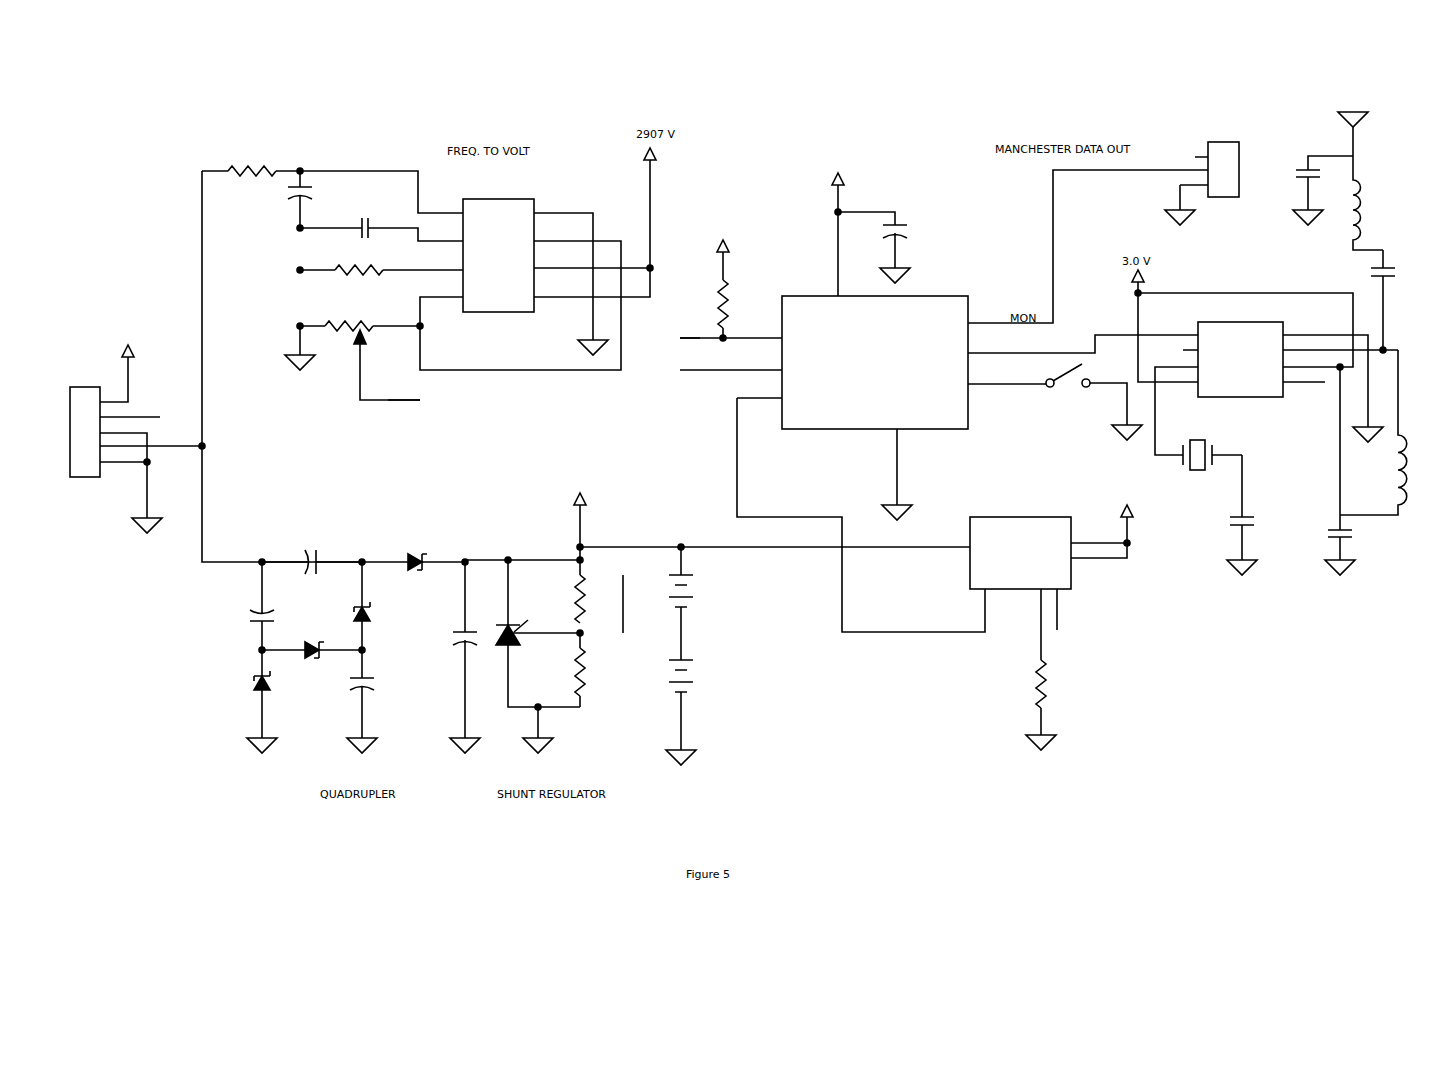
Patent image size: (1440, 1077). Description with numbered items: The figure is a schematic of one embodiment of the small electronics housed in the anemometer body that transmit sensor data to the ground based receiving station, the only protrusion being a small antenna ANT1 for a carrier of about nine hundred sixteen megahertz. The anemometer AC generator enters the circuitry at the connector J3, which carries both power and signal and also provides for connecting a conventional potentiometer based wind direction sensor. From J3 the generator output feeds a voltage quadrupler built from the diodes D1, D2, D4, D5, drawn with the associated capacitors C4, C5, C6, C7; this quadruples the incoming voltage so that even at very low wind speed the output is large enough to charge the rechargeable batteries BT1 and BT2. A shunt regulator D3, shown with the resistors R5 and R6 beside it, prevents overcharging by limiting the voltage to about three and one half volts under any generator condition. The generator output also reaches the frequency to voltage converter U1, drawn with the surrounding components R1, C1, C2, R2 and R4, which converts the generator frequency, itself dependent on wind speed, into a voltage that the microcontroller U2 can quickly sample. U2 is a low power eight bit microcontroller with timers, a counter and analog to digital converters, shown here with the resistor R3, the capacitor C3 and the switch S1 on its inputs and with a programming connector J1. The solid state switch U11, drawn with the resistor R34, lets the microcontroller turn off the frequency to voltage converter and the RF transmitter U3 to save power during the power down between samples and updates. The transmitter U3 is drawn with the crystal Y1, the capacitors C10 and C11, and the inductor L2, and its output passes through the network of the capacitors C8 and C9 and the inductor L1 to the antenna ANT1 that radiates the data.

The resistor 100K R1 is at (251, 149).
The tantalum capacitor 1.0 C1 is at (284, 199).
The capacitor 0.01 C2 is at (339, 228).
The potentiometer 50K R2 is at (352, 354).
The resistor 100K R4 is at (353, 270).
The frequency to voltage converter U1 is at (496, 263).
The connector J3 is at (136, 433).
The capacitor 10 MF C4 is at (312, 541).
The capacitor 10 MF C5 is at (231, 607).
The capacitor 10 MF C6 is at (473, 657).
The capacitor 10 MF C7 is at (386, 701).
The diode D1 is at (415, 545).
The diode D2 is at (370, 606).
The diode D4 is at (313, 641).
The diode D5 is at (283, 700).
The shunt regulator D3 is at (524, 643).
The resistor 32K R5 is at (595, 556).
The resistor 100K R6 is at (599, 670).
The rechargeable battery BT1 is at (704, 602).
The rechargeable battery BT2 is at (702, 704).
The microcontroller U2 is at (832, 381).
The resistor 1 M R3 is at (731, 282).
The capacitor 3.3 C3 is at (887, 246).
The switch MC S1 is at (1055, 396).
The solid state switch U11 is at (1052, 559).
The resistor 1K R34 is at (1059, 669).
The programming port connector CON3 J1 is at (1211, 162).
The RF transmitter U3 is at (1290, 376).
The crystal Y1 is at (1198, 427).
The capacitor C10 is at (1259, 515).
The capacitor C11 is at (1356, 471).
The inductor L2 is at (1373, 432).
The inductor 22 L1 is at (1360, 203).
The capacitor C8 is at (1316, 177).
The capacitor 10 C9 is at (1366, 300).
The antenna ANT1 is at (1367, 122).